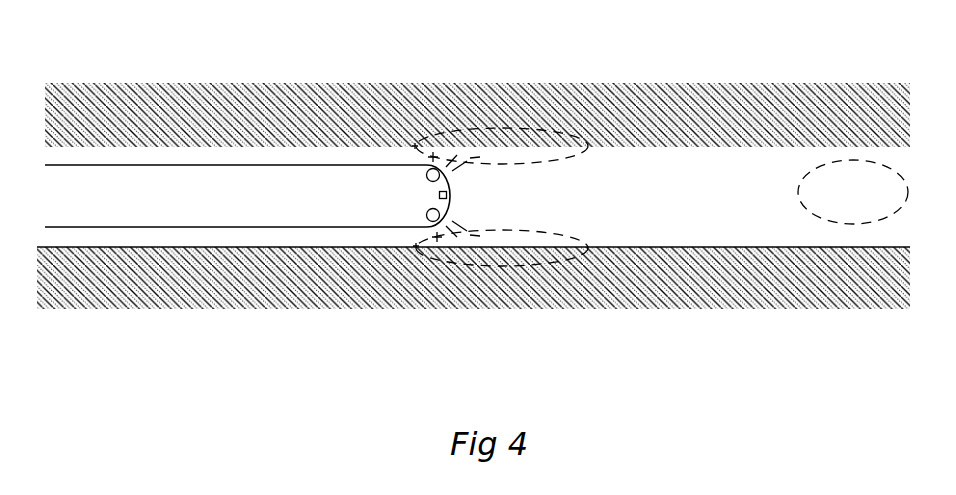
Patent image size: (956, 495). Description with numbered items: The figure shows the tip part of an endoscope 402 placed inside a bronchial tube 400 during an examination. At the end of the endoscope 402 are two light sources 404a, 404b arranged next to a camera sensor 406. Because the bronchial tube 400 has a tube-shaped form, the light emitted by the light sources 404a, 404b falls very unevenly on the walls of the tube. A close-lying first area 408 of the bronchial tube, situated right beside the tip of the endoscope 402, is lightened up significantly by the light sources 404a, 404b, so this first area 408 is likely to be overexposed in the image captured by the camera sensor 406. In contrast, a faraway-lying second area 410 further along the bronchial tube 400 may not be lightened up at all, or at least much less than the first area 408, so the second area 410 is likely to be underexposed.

The bronchial tube 400 is at (738, 189).
The endoscope 402 is at (290, 205).
The light source 404a is at (441, 171).
The light source 404b is at (441, 222).
The camera sensor 406 is at (451, 198).
The first area 408 is at (556, 140).
The second area 410 is at (827, 205).